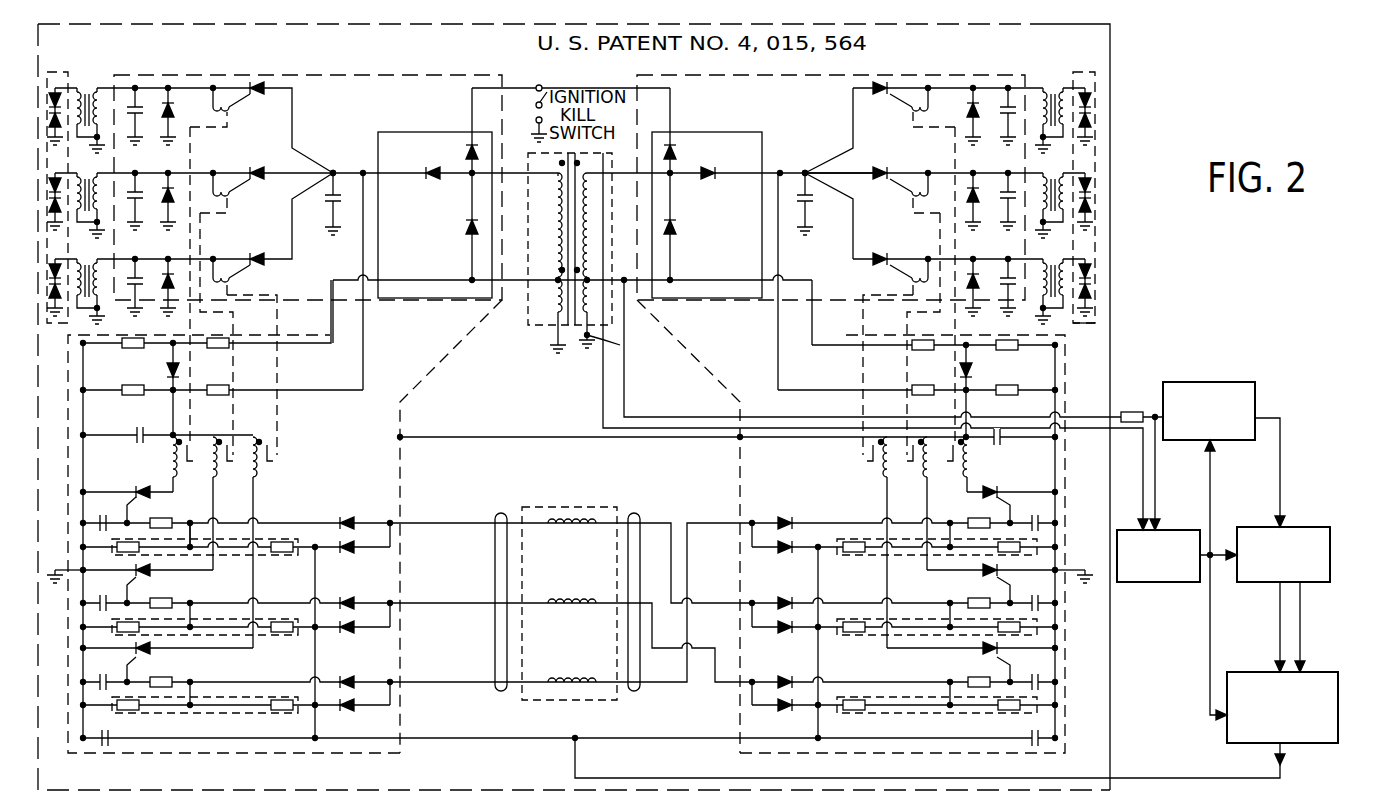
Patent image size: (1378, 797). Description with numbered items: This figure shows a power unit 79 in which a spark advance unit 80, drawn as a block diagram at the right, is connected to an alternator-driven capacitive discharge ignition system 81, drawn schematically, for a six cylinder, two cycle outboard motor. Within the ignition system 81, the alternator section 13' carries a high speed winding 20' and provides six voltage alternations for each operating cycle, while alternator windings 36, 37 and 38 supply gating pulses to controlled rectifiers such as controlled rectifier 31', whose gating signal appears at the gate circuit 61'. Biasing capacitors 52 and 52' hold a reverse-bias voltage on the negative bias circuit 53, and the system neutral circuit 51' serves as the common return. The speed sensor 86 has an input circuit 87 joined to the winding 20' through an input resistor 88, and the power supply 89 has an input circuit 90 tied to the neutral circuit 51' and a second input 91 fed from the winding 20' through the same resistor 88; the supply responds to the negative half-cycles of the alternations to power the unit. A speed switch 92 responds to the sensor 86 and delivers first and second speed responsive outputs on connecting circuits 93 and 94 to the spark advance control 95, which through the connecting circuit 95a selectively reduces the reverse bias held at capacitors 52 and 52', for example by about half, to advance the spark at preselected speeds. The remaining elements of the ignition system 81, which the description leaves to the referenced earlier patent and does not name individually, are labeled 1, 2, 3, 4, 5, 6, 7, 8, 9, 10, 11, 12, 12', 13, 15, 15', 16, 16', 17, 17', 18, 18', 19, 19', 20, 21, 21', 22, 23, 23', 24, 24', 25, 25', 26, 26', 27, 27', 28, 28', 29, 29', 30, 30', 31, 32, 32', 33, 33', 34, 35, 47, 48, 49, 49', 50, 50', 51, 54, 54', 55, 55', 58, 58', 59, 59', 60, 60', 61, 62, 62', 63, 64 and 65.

The diode pair 1 is at (52, 108).
The diode pair 2 is at (1090, 110).
The diode pair 3 is at (52, 193).
The diode pair 4 is at (1090, 197).
The diode pair 5 is at (52, 279).
The diode pair 6 is at (1090, 280).
The diode group enclosure 7 is at (1095, 325).
The diode group enclosure 8 is at (55, 72).
The diode group enclosure 9 is at (1088, 72).
The left ignition circuit group 10 is at (308, 187).
The right ignition circuit group 11 is at (831, 187).
The capacitor 12 is at (320, 207).
The capacitor 12' is at (828, 203).
The rectifier bridge 13 is at (633, 254).
The alternator section 13' is at (875, 311).
The SCR trigger assembly 15 is at (231, 120).
The SCR trigger assembly 15' is at (912, 120).
The SCR trigger assembly 16 is at (246, 197).
The SCR trigger assembly 16' is at (898, 205).
The SCR trigger assembly 17 is at (265, 273).
The SCR trigger assembly 17' is at (878, 274).
The control circuit 18 is at (234, 544).
The control circuit 18' is at (902, 544).
The trigger transformers 19 is at (223, 469).
The trigger transformers 19' is at (876, 457).
The secondary winding 20 is at (531, 316).
The high speed winding 20' is at (618, 314).
The transformer primary winding 21 is at (570, 239).
The transformer primary winding 21' is at (602, 219).
The rectifier bridge 22 is at (432, 303).
The capacitor 23 is at (168, 420).
The capacitor 23' is at (727, 450).
The resistor network 24 is at (223, 357).
The resistor network 24' is at (916, 388).
The SCR 25 is at (264, 107).
The SCR 25' is at (874, 106).
The ignition transformer 26 is at (90, 93).
The ignition transformer 26' is at (1048, 96).
The trigger lead 27 is at (212, 278).
The trigger lead 27' is at (935, 278).
The trigger coil 28 is at (216, 100).
The trigger coil 28' is at (928, 102).
The trigger lead 29 is at (222, 326).
The trigger lead 29' is at (920, 326).
The trigger lead 30 is at (277, 369).
The trigger lead 30' is at (869, 369).
The SCR 31 is at (128, 495).
The controlled rectifier 31' is at (1011, 487).
The SCR 32 is at (148, 583).
The SCR 32' is at (991, 583).
The SCR 33 is at (168, 662).
The SCR 33' is at (971, 662).
The trigger transformer winding 34 is at (170, 458).
The transformer core 35 is at (189, 462).
The alternator winding 36 is at (575, 528).
The alternator winding 37 is at (585, 607).
The alternator winding 38 is at (575, 690).
The slip ring 47 is at (500, 512).
The slip ring 48 is at (633, 512).
The diode pair 49 is at (353, 496).
The diode pair 49' is at (772, 516).
The resistor 50 is at (168, 510).
The resistor 50' is at (964, 508).
The resistor network 51 is at (196, 544).
The system neutral circuit 51' is at (630, 356).
The biasing capacitor 52 is at (136, 731).
The biasing capacitor 52' is at (1001, 731).
The negative bias circuit 53 is at (640, 740).
The resistor network 54 is at (903, 708).
The resistor network 54' is at (236, 693).
The diode 55 is at (785, 645).
The diode pair 55' is at (365, 704).
The resistor 58 is at (275, 569).
The resistor 58' is at (868, 569).
The resistor 59 is at (113, 563).
The resistor 59' is at (930, 558).
The lead 60 is at (305, 642).
The lead 60' is at (839, 642).
The lead 61 is at (211, 614).
The gate circuit 61' is at (930, 614).
The capacitor 62 is at (111, 513).
The capacitor 62' is at (1031, 511).
The boundary 63 is at (451, 526).
The boundary 64 is at (712, 375).
The diode pair 65 is at (350, 553).
The power unit 79 is at (1182, 112).
The spark advance unit 80 is at (1200, 332).
The alternator-driven ignition system 81 is at (937, 30).
The speed sensor 86 is at (1257, 393).
The input circuit 87 is at (1153, 414).
The input resistor 88 is at (1131, 410).
The power supply 89 is at (1145, 585).
The input circuit 90 is at (1140, 490).
The second input 91 is at (1158, 485).
The speed switch 92 is at (1318, 585).
The connecting circuit 93 is at (1278, 648).
The connecting circuit 94 is at (1302, 640).
The spark advance control 95 is at (1310, 745).
The connecting circuit 95a is at (1275, 770).